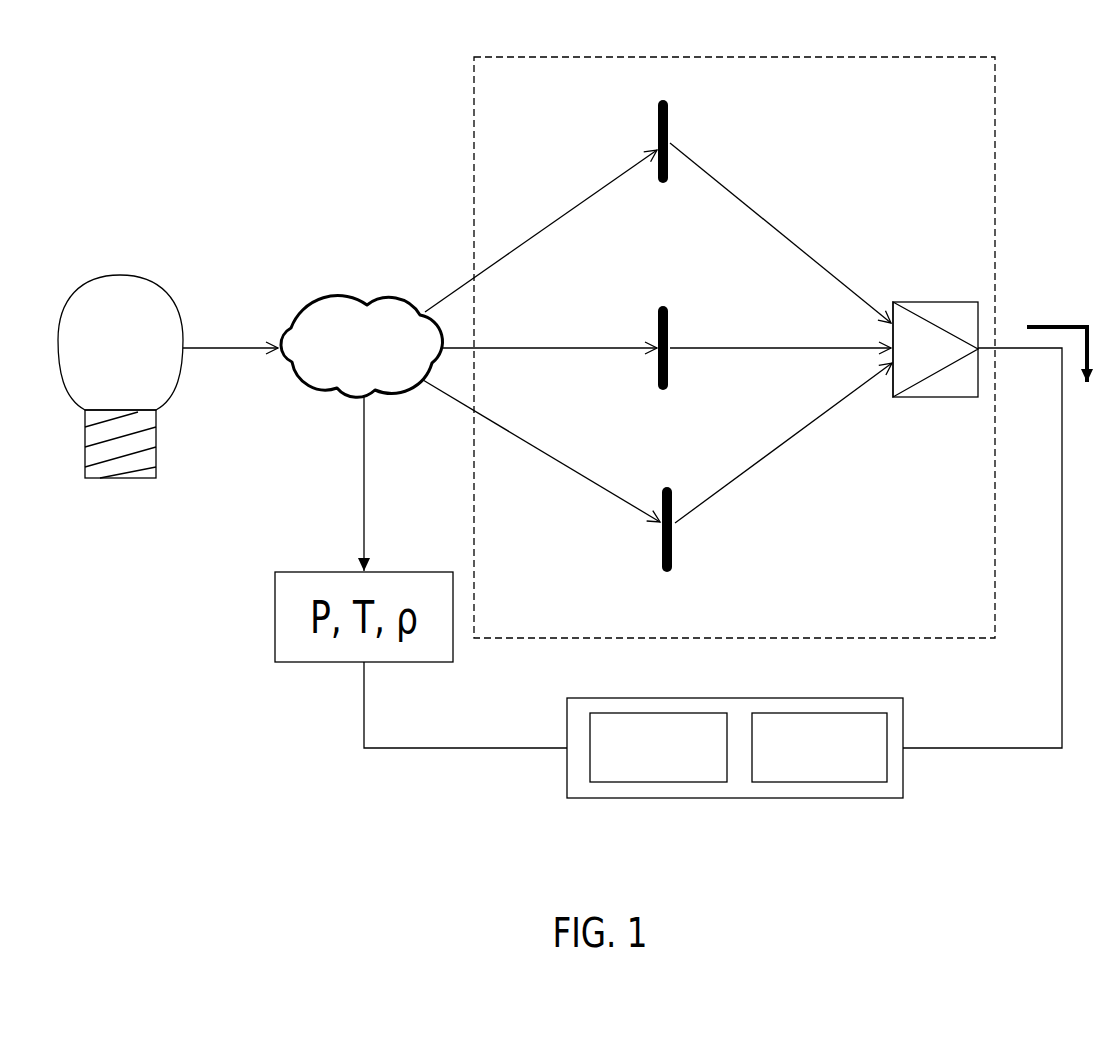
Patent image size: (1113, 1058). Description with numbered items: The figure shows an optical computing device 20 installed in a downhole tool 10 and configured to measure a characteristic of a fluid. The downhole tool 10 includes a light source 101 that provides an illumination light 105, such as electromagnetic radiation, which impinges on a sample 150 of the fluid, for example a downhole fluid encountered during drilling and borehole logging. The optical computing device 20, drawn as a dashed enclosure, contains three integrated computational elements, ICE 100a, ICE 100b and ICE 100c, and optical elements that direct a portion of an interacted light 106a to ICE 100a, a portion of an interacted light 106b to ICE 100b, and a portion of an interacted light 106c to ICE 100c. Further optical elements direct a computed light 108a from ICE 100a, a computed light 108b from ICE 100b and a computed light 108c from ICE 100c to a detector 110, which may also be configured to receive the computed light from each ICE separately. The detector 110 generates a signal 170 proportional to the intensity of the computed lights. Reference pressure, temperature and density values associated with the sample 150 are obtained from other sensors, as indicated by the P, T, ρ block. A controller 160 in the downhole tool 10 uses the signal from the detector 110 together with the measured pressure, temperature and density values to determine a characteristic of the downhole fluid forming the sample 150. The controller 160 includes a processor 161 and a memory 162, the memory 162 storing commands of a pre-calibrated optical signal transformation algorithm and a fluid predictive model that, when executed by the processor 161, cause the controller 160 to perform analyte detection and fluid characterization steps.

The downhole tool 10 is at (296, 59).
The optical computing device 20 is at (914, 112).
The light source 101 is at (89, 367).
The illumination light 105 is at (223, 340).
The sample 150 is at (332, 364).
The interacted light 106a is at (600, 349).
The interacted light 106b is at (563, 213).
The interacted light 106c is at (567, 470).
The ICE 100a is at (670, 333).
The ICE 100b is at (668, 128).
The ICE 100c is at (674, 540).
The computed light 108a is at (748, 350).
The computed light 108b is at (806, 255).
The computed light 108c is at (789, 440).
The detector 110 is at (905, 302).
The controller 160 is at (804, 754).
The processor 161 is at (697, 767).
The memory 162 is at (857, 767).
The signal 170 is at (1062, 326).